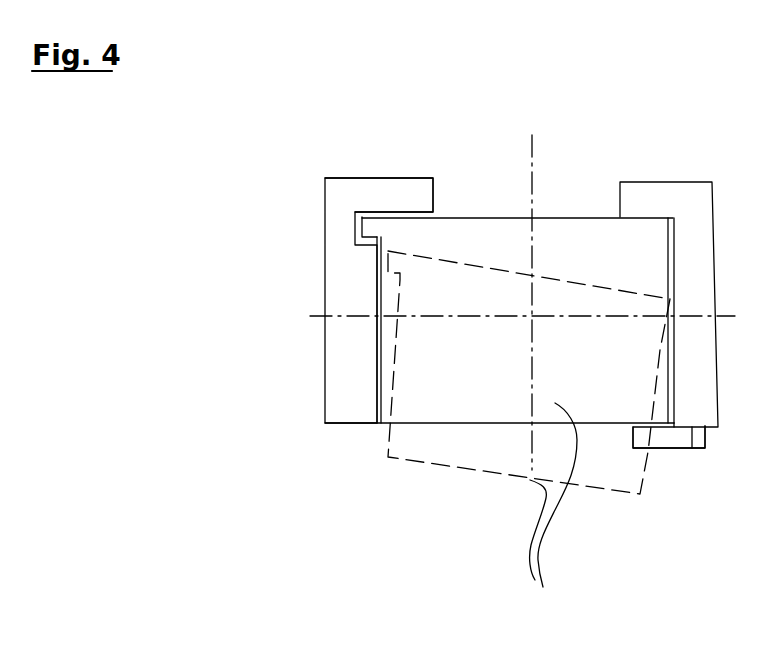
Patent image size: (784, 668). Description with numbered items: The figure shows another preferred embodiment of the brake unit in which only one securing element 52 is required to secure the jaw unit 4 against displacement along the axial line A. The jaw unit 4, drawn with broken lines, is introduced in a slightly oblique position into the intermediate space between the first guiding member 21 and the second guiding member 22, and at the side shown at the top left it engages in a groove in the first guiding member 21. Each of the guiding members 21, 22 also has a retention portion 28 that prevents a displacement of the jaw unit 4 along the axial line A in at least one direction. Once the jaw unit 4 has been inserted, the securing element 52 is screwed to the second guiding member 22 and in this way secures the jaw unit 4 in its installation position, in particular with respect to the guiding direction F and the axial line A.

The jaw unit 4 is at (568, 612).
The first guiding member 21 is at (353, 289).
The second guiding member 22 is at (693, 252).
The retention portion 28 is at (357, 116).
The securing element 52 is at (670, 437).
The axial line A is at (530, 200).
The guiding direction F is at (420, 320).